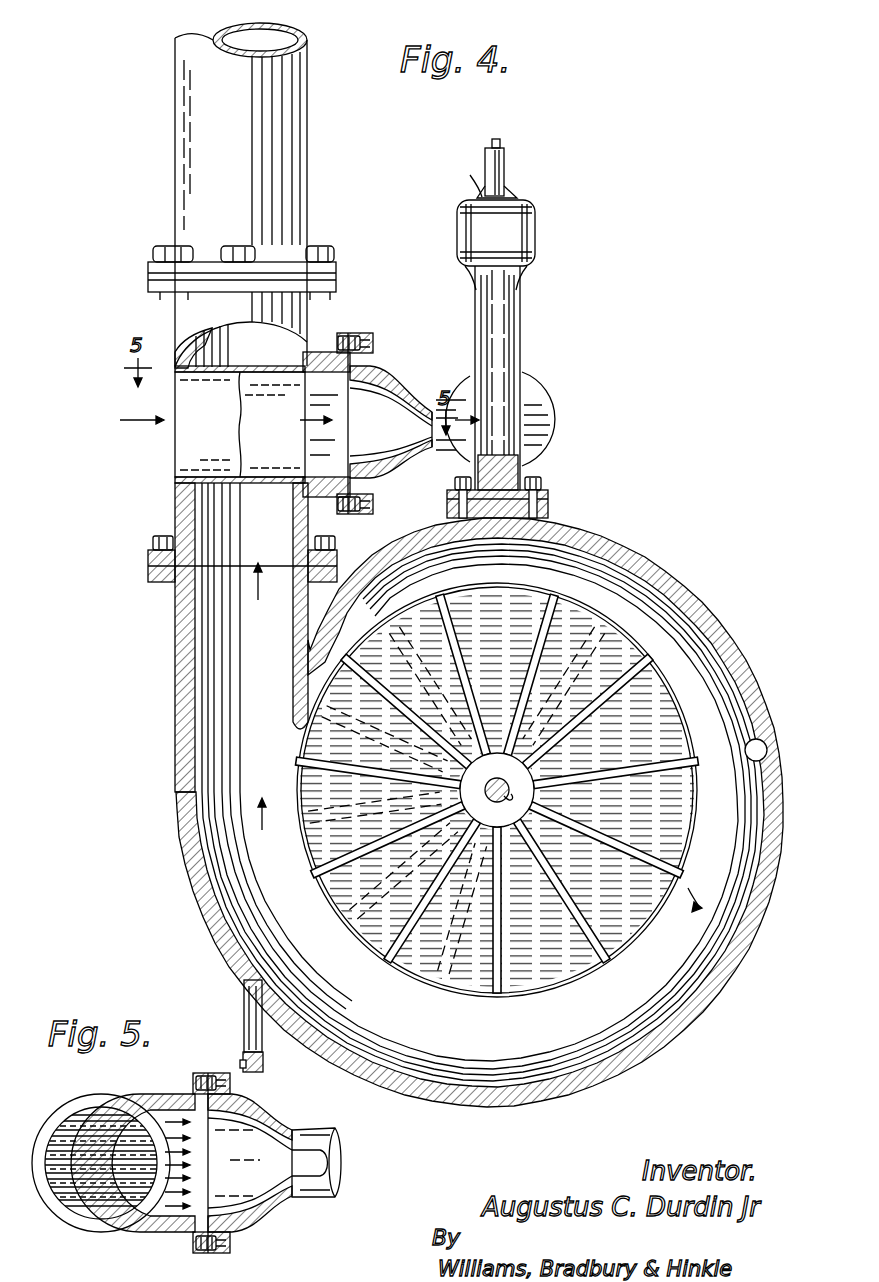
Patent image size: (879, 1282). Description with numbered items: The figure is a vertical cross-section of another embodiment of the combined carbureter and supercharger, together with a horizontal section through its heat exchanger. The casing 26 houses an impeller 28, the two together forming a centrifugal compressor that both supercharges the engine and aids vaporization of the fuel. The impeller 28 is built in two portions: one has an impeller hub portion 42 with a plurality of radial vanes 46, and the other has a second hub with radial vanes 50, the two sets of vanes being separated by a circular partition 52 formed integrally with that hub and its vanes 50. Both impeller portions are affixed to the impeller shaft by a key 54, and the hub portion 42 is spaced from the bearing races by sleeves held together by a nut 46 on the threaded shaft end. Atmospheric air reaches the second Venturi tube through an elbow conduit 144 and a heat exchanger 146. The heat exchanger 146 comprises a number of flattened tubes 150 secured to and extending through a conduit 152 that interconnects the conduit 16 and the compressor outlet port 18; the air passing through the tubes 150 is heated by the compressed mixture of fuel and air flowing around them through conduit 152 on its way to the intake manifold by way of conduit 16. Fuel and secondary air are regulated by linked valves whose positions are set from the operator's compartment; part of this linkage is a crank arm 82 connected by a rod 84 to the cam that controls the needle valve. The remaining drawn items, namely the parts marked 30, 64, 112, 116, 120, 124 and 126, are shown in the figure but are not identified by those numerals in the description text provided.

In FIG. 4, the conduit 16 is at (178, 182).
In FIG. 4, the compressor outlet port 18 is at (178, 626).
In FIG. 4, the casing 26 is at (738, 642).
In FIG. 4, the impeller 28 is at (592, 596).
In FIG. 4, the impeller 30 is at (497, 793).
In FIG. 4, the impeller hub portion 42 is at (497, 790).
In FIG. 4, the radial vanes 46 is at (612, 684).
In FIG. 4, the radial vanes 50 is at (668, 770).
In FIG. 4, the circular partition 52 is at (652, 686).
In FIG. 4, the key 54 is at (499, 782).
In FIG. 4, the casing wall 64 is at (764, 748).
In FIG. 4, the crank arm 82 is at (264, 1066).
In FIG. 4, the rod 84 is at (246, 992).
In FIG. 5, the outlet nozzle 112 is at (303, 1132).
In FIG. 4, the shaft housing 116 is at (521, 299).
In FIG. 4, the housing flange 120 is at (545, 528).
In FIG. 4, the shaft end 124 is at (497, 145).
In FIG. 4, the bearing stub 126 is at (505, 162).
In FIG. 4, the elbow conduit 144 is at (436, 378).
In FIG. 4, the heat exchanger 146 is at (178, 508).
In FIG. 5, the heat exchanger 146 is at (140, 1094).
In FIG. 4, the flattened tubes 150 is at (284, 468).
In FIG. 5, the flattened tubes 150 is at (98, 1140).
In FIG. 4, the conduit 152 is at (180, 324).
In FIG. 5, the conduit 152 is at (80, 1100).